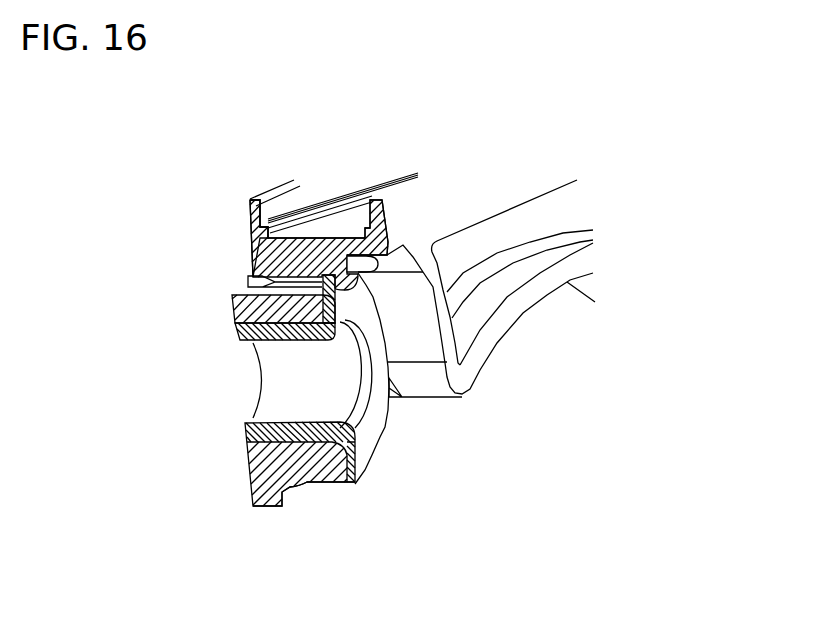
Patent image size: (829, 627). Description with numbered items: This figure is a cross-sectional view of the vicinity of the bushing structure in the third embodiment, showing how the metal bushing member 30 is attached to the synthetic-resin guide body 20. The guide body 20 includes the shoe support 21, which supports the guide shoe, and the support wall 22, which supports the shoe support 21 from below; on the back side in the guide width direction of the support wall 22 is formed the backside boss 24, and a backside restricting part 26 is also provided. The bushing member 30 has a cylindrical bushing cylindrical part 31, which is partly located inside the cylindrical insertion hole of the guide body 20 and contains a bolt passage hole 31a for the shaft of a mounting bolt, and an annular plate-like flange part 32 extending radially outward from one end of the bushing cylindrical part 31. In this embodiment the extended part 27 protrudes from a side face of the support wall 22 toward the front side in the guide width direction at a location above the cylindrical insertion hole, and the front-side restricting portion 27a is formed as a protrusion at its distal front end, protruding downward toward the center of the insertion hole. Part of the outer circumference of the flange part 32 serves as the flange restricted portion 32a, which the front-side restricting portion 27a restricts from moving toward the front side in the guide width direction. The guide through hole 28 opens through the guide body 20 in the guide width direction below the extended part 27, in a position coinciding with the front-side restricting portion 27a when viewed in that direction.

The guide body 20 is at (523, 175).
The shoe support 21 is at (325, 275).
The support wall 22 is at (288, 236).
The backside boss 24 is at (256, 486).
The backside restricting part 26 is at (335, 483).
The extended part 27 is at (337, 238).
The front-side restricting portion 27a is at (365, 256).
The guide through hole 28 is at (248, 280).
The bushing member 30 is at (382, 447).
The bushing cylindrical part 31 is at (240, 341).
The bolt passage hole 31a is at (262, 407).
The flange part 32 is at (352, 465).
The flange restricted portion 32a is at (262, 234).